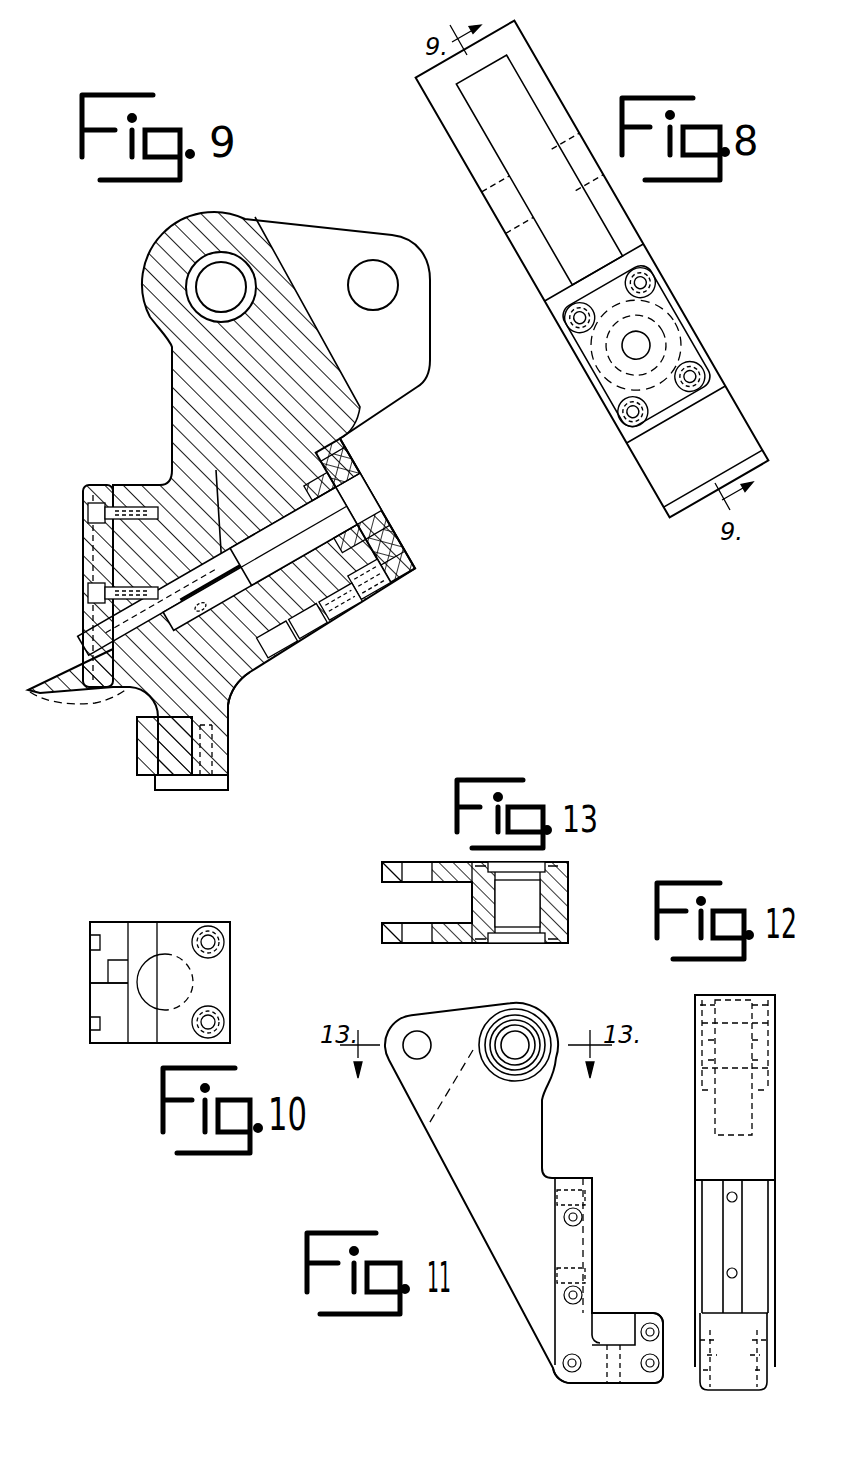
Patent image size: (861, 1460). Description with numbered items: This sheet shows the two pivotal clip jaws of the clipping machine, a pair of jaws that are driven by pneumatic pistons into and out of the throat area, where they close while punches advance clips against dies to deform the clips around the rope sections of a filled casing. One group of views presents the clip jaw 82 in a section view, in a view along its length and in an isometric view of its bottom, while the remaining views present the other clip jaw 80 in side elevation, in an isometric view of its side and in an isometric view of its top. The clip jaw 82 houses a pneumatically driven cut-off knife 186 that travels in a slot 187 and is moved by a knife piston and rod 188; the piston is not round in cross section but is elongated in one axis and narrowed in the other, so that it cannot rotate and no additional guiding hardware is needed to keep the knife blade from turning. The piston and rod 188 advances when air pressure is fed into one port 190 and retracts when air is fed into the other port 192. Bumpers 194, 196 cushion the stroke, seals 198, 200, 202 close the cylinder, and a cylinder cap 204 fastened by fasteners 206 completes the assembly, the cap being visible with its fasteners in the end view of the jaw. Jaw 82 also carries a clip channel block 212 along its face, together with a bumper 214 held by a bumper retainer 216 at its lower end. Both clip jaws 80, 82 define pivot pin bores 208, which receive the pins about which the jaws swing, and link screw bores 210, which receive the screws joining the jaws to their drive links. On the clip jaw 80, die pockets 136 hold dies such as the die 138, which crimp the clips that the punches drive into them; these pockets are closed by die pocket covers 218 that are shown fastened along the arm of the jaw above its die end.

In FIG. 13, the clip jaw 80 is at (568, 900).
In FIG. 11, the clip jaw 80 is at (542, 1145).
In FIG. 12, the clip jaw 80 is at (777, 1108).
In FIG. 9, the clip jaw 82 is at (405, 363).
In FIG. 8, the clip jaw 82 is at (633, 225).
In FIG. 10, the clip jaw 82 is at (142, 1043).
In FIG. 11, the die pockets 136 is at (635, 1313).
In FIG. 12, the die pockets 136 is at (690, 1323).
In FIG. 11, the die 138 is at (590, 1333).
In FIG. 9, the cut-off knife 186 is at (255, 680).
In FIG. 10, the slot 187 is at (90, 980).
In FIG. 9, the knife piston and rod 188 is at (317, 633).
In FIG. 9, the port 190 is at (367, 498).
In FIG. 9, the port 192 is at (293, 650).
In FIG. 9, the bumper 194 is at (363, 530).
In FIG. 9, the bumper 196 is at (340, 610).
In FIG. 9, the seal 198 is at (375, 555).
In FIG. 9, the seal 200 is at (378, 582).
In FIG. 9, the seal 202 is at (172, 445).
In FIG. 9, the cylinder cap 204 is at (340, 482).
In FIG. 8, the cylinder cap 204 is at (660, 295).
In FIG. 8, the fasteners 206 is at (703, 357).
In FIG. 9, the pivot pin bores 208 is at (233, 253).
In FIG. 11, the pivot pin bores 208 is at (523, 1037).
In FIG. 9, the link screw bores 210 is at (395, 268).
In FIG. 11, the link screw bores 210 is at (410, 1032).
In FIG. 9, the clip channel block 212 is at (85, 560).
In FIG. 9, the bumper 214 is at (147, 750).
In FIG. 9, the bumper retainer 216 is at (183, 783).
In FIG. 11, the die pocket covers 218 is at (573, 1240).
In FIG. 12, the die pocket covers 218 is at (695, 1193).